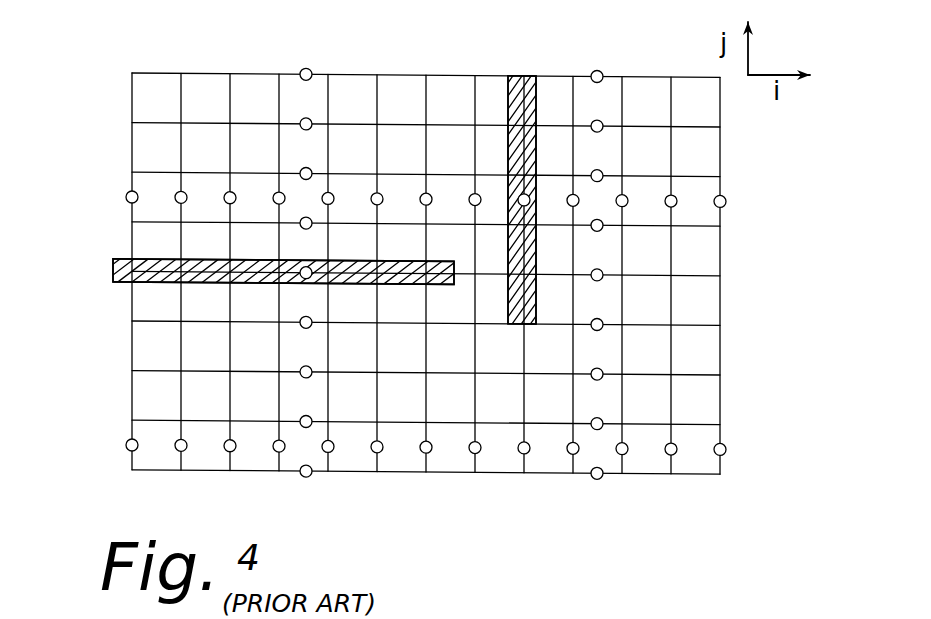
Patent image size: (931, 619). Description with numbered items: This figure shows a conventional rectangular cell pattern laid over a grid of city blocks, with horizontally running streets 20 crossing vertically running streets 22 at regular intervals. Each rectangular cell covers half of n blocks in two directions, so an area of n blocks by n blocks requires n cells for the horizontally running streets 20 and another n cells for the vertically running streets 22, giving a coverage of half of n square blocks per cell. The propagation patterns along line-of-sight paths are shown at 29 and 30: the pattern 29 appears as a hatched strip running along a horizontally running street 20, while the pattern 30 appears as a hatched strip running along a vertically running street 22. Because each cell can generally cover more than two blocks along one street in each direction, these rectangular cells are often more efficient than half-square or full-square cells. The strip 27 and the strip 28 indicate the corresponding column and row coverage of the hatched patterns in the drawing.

The horizontally running streets 20 is at (725, 321).
The vertically running streets 22 is at (479, 480).
The column of pixels 27 is at (505, 198).
The row of pixels 28 is at (297, 256).
The propagation pattern along line-of-sight path 29 is at (101, 272).
The propagation pattern along line-of-sight path 30 is at (541, 72).